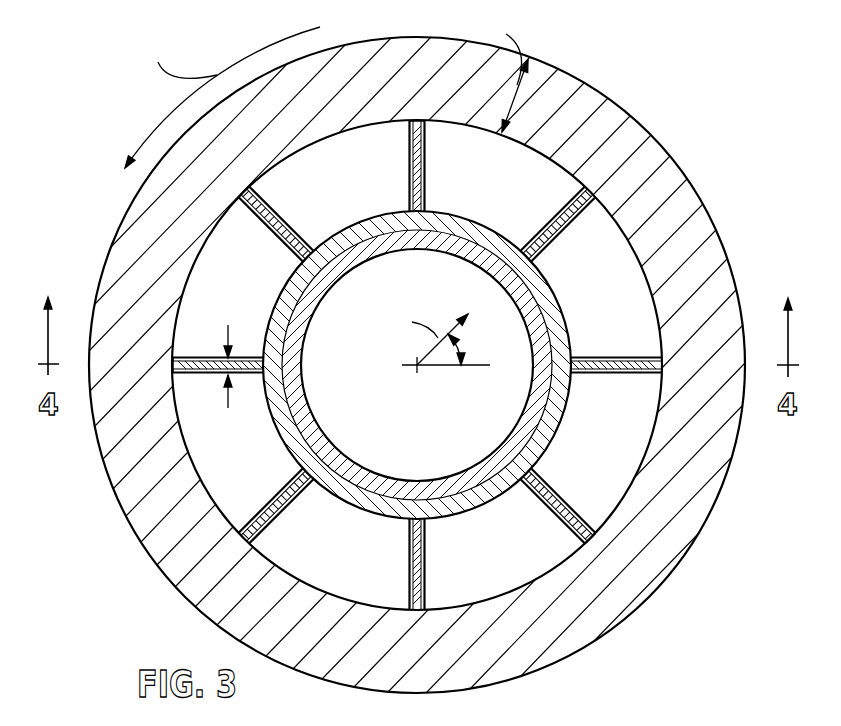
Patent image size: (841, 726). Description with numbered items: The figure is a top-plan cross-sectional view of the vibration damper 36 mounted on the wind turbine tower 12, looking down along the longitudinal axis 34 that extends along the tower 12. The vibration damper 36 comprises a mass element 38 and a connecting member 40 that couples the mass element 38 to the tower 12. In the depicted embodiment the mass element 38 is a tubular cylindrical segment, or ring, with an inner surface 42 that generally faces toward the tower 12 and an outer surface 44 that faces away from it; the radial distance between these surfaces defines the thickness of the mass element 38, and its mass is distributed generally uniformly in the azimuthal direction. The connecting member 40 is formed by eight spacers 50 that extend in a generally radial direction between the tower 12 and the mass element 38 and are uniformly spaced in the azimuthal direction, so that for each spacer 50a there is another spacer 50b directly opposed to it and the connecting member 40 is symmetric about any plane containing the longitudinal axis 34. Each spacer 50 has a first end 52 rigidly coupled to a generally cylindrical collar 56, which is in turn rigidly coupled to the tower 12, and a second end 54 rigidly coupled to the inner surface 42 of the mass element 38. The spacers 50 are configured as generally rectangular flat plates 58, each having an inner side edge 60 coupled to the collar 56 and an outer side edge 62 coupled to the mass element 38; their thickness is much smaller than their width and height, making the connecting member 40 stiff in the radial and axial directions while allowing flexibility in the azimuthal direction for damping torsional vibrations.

The tower 12 is at (433, 480).
The longitudinal axis 34 is at (414, 365).
The vibration damper 36 is at (688, 106).
The mass element 38 is at (588, 82).
The connecting member 40 is at (291, 457).
The inner surface 42 is at (640, 268).
The outer surface 44 is at (128, 210).
The spacers 50 is at (417, 366).
The spacer 50a is at (427, 168).
The spacer 50b is at (428, 582).
The first end 52 is at (417, 368).
The second end 54 is at (395, 326).
The collar 56 is at (279, 289).
The flat plates 58 is at (287, 217).
The inner side edge 60 is at (512, 258).
The outer side edge 62 is at (417, 121).